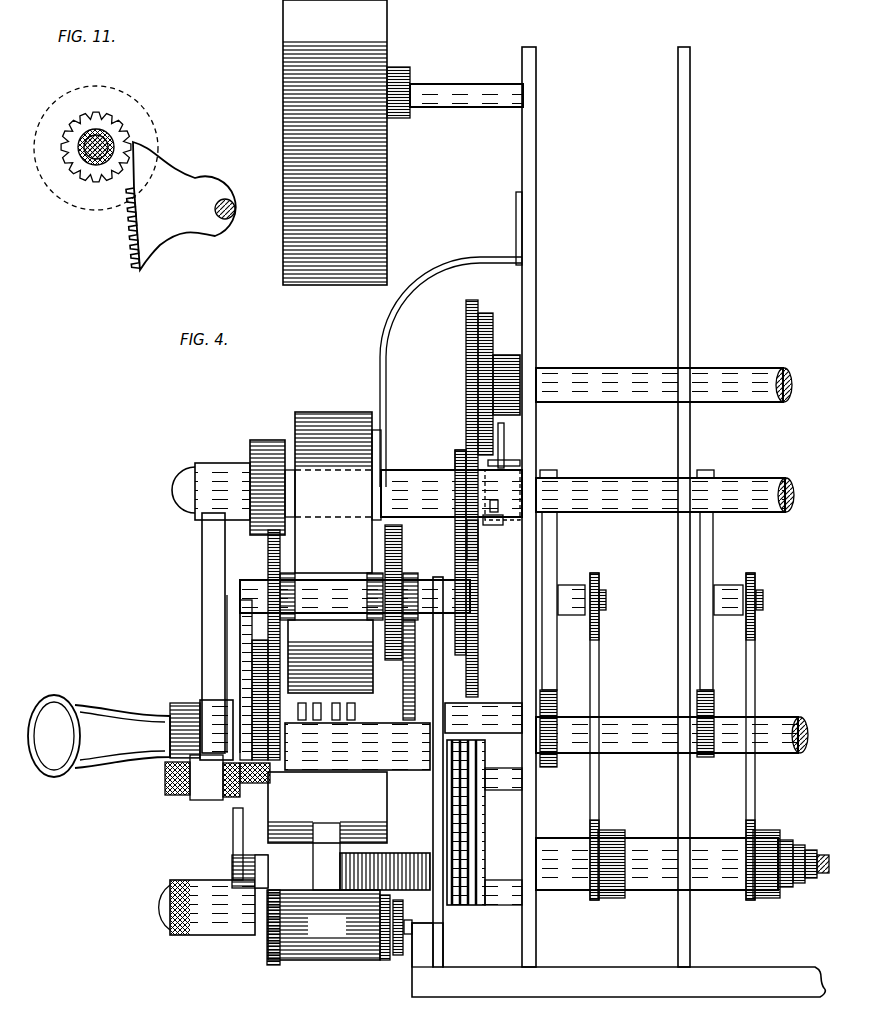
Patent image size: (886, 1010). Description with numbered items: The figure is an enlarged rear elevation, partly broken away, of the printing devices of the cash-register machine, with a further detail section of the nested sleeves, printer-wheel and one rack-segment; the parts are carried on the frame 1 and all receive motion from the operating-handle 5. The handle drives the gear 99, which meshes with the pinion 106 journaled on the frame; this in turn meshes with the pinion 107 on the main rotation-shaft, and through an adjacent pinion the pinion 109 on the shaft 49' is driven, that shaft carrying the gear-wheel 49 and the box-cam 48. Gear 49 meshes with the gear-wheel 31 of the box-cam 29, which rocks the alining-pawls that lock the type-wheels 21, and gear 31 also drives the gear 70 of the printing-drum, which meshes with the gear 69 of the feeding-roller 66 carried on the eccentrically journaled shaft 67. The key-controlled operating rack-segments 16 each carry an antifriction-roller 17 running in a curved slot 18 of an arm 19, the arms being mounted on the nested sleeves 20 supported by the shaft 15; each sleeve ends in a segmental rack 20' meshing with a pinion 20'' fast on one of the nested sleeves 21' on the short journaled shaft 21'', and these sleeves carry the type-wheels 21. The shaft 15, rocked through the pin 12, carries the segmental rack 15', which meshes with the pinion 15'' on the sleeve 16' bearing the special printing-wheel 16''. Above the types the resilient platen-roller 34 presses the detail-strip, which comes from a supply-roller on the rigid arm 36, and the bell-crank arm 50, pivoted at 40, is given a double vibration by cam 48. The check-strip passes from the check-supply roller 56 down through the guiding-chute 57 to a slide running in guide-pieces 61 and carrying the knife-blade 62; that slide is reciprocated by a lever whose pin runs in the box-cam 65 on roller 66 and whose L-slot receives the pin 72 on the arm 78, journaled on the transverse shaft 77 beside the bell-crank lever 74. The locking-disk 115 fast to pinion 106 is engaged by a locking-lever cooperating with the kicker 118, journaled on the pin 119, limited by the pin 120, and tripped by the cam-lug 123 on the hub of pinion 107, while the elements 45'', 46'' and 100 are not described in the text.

In FIG. 4, the frame 1 is at (538, 170).
In FIG. 4, the operating-handle 5 is at (204, 604).
In FIG. 4, the pin 12 is at (149, 747).
In FIG. 11, the shaft 15 is at (223, 234).
In FIG. 4, the shaft 15 is at (803, 851).
In FIG. 11, the segmental rack 15' is at (181, 206).
In FIG. 4, the segmental rack 15' is at (491, 805).
In FIG. 11, the pinion 15'' is at (75, 105).
In FIG. 4, the operating rack-segments 16 is at (665, 529).
In FIG. 11, the sleeve 16' is at (96, 139).
In FIG. 11, the special printing-wheel 16'' is at (96, 137).
In FIG. 4, the antifriction-roller 17 is at (606, 600).
In FIG. 4, the curved slots 18 is at (347, 492).
In FIG. 4, the arms 19 is at (599, 660).
In FIG. 4, the nested sleeves 20 is at (632, 846).
In FIG. 4, the segmental rack 20' is at (491, 822).
In FIG. 4, the pinions 20'' is at (480, 821).
In FIG. 4, the type-wheels 21 is at (352, 746).
In FIG. 11, the nested sleeves 21' is at (86, 185).
In FIG. 4, the nested sleeves 21' is at (672, 739).
In FIG. 11, the short journaled shaft 21'' is at (66, 175).
In FIG. 4, the short journaled shaft 21'' is at (508, 754).
In FIG. 4, the box-cam 29 is at (265, 680).
In FIG. 4, the gear-wheel 31 is at (268, 665).
In FIG. 4, the platen-roller 34 is at (330, 649).
In FIG. 4, the rigid arm 36 is at (386, 352).
In FIG. 4, the pivot 40 is at (260, 750).
In FIG. 4, the gear 45'' is at (481, 700).
In FIG. 4, the gear 46'' is at (444, 665).
In FIG. 4, the box-cam 48 is at (387, 540).
In FIG. 4, the gear-wheel 49 is at (355, 645).
In FIG. 4, the shaft 49' is at (424, 761).
In FIG. 4, the bell-crank arm 50 is at (405, 627).
In FIG. 4, the check-supply roller 56 is at (403, 142).
In FIG. 4, the guiding-chute 57 is at (327, 831).
In FIG. 4, the guide-pieces 61 is at (207, 918).
In FIG. 4, the knife-blade 62 is at (415, 955).
In FIG. 4, the box-cam 65 is at (395, 945).
In FIG. 4, the feeding-roller 66 is at (300, 960).
In FIG. 4, the shaft 67 is at (412, 924).
In FIG. 4, the gear 69 is at (267, 955).
In FIG. 4, the gear 70 is at (352, 850).
In FIG. 4, the pin 72 is at (383, 940).
In FIG. 4, the bell-crank lever 74 is at (233, 832).
In FIG. 4, the transverse shaft 77 is at (232, 862).
In FIG. 4, the arm 78 is at (324, 925).
In FIG. 4, the gear 99 is at (440, 645).
In FIG. 4, the gear 100 is at (458, 458).
In FIG. 4, the pinion 106 is at (466, 378).
In FIG. 4, the pinion 107 is at (478, 565).
In FIG. 4, the pinion 109 is at (458, 565).
In FIG. 4, the locking-disk 115 is at (495, 347).
In FIG. 4, the kicker 118 is at (499, 535).
In FIG. 4, the pin 119 is at (510, 466).
In FIG. 4, the pin 120 is at (505, 440).
In FIG. 4, the cam-lug 123 is at (503, 520).